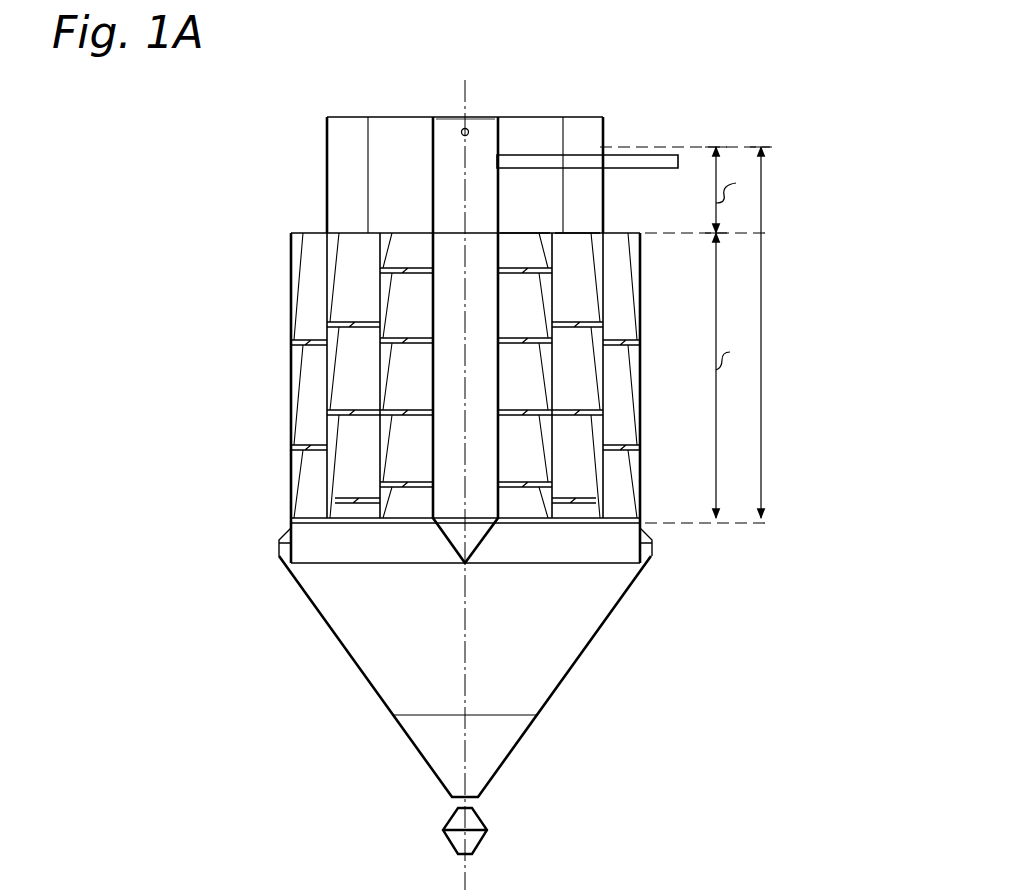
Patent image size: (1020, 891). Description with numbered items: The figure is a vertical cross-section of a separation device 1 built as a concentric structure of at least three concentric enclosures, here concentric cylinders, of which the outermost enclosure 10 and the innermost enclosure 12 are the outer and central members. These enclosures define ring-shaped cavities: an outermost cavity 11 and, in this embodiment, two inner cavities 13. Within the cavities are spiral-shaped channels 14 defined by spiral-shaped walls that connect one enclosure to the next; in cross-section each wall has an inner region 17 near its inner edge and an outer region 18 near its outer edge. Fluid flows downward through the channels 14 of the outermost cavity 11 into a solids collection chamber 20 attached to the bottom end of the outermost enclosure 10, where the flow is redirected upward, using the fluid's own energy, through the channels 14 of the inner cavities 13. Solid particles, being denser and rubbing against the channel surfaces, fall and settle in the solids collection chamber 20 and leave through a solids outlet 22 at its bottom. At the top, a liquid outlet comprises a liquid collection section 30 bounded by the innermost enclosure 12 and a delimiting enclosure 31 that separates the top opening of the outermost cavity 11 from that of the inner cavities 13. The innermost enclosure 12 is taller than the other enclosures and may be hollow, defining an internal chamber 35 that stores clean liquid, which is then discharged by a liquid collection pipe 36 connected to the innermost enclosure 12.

The separation device 1 is at (737, 76).
The outermost enclosure 10 is at (650, 411).
The outermost cavity 11 is at (620, 228).
The innermost enclosure 12 is at (433, 214).
The inner cavities 13 is at (522, 233).
The spiral-shaped channels 14 is at (580, 345).
The inner region 17 is at (318, 398).
The outer region 18 is at (290, 372).
The solids collection chamber 20 is at (601, 668).
The solids outlet 22 is at (476, 803).
The liquid collection section 30 is at (357, 130).
The delimiting enclosure 31 is at (327, 150).
The internal chamber 35 is at (485, 128).
The liquid collection pipe 36 is at (620, 150).